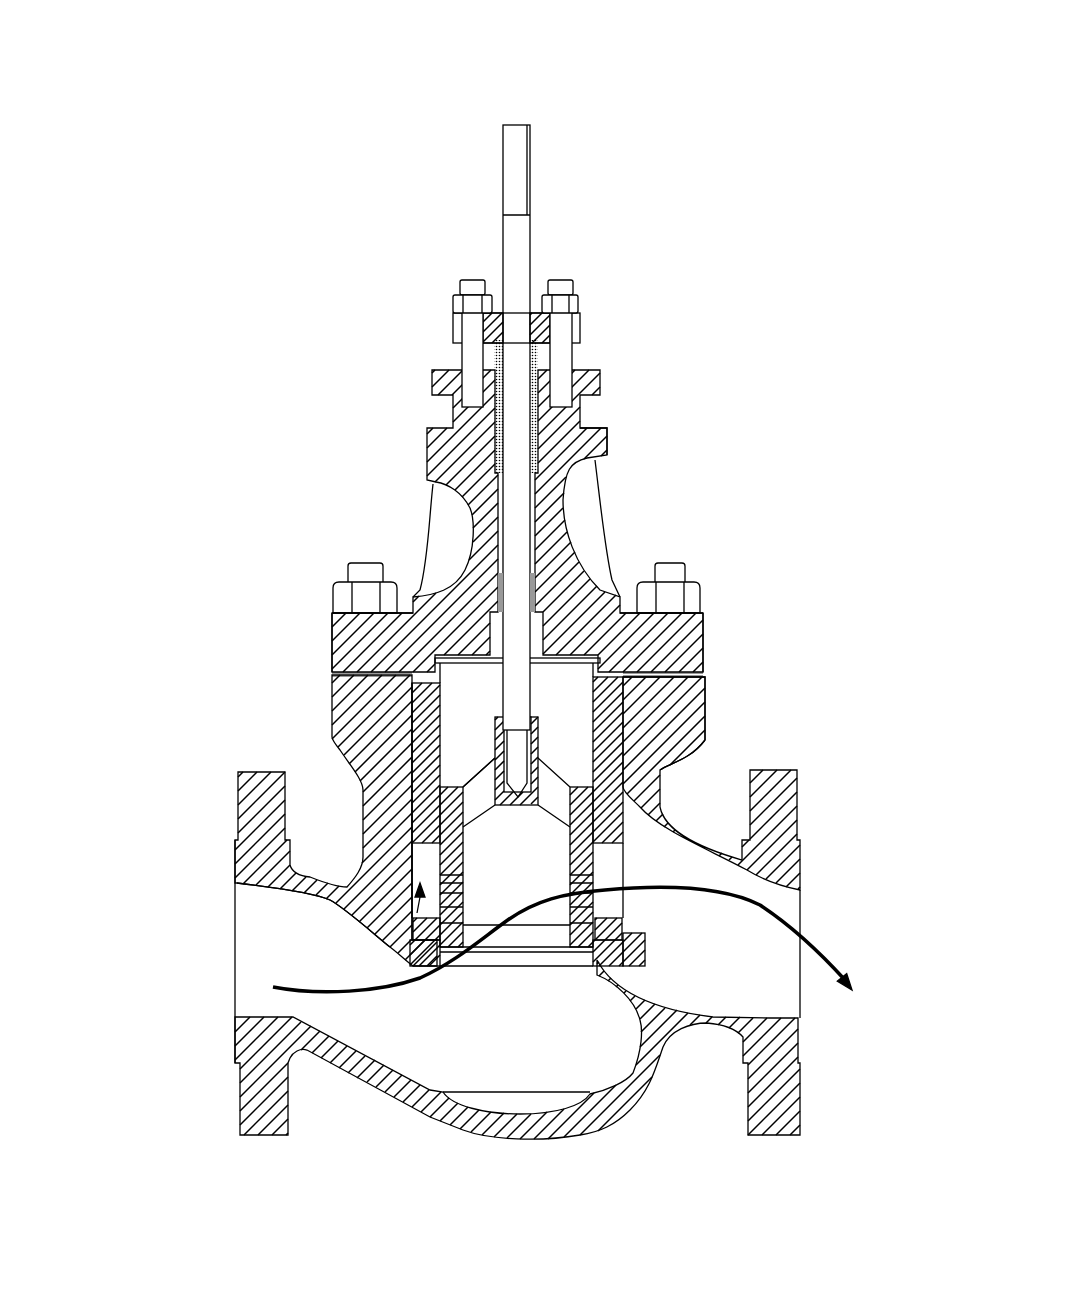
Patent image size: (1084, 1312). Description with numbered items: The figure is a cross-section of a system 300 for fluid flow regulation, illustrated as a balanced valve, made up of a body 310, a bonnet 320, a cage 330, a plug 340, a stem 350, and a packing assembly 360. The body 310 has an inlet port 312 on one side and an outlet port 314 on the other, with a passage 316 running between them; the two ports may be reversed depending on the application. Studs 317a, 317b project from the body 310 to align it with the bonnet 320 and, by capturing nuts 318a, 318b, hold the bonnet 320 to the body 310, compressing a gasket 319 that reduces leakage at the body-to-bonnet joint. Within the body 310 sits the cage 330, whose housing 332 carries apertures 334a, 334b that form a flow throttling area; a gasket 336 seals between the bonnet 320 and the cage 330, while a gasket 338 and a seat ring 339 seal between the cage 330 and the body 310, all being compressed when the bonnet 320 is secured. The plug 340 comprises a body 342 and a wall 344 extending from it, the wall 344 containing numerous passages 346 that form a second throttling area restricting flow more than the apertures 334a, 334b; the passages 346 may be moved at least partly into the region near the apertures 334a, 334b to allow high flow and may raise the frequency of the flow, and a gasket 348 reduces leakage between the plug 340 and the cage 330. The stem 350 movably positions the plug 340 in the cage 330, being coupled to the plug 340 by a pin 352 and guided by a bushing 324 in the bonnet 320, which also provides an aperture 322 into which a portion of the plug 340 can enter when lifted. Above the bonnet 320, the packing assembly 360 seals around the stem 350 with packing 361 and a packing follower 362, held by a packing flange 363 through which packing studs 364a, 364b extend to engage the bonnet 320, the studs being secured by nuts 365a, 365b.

The system for fluid flow regulation 300 is at (527, 50).
The body 310 is at (332, 683).
The inlet port 312 is at (232, 990).
The outlet port 314 is at (814, 915).
The passage 316 is at (546, 1079).
The stud 317a is at (362, 560).
The stud 317b is at (688, 570).
The nut 318a is at (333, 592).
The nut 318b is at (700, 592).
The gasket 319 is at (693, 706).
The bonnet 320 is at (570, 532).
The aperture 322 is at (482, 647).
The bushing 324 is at (493, 452).
The cage 330 is at (412, 775).
The housing 332 is at (412, 790).
The aperture 334a is at (417, 913).
The aperture 334b is at (609, 860).
The gasket 336 is at (690, 747).
The gasket 338 is at (412, 970).
The seat ring 339 is at (622, 937).
The plug 340 is at (470, 865).
The body 342 is at (478, 803).
The wall 344 is at (472, 860).
The passages 346 is at (573, 887).
The gasket 348 is at (593, 803).
The stem 350 is at (530, 200).
The pin 352 is at (519, 763).
The packing assembly 360 is at (636, 352).
The packing 361 is at (562, 408).
The packing follower 362 is at (483, 373).
The packing flange 363 is at (583, 328).
The packing stud 364a is at (560, 283).
The packing stud 364b is at (473, 283).
The nut 365a is at (578, 300).
The nut 365b is at (455, 297).